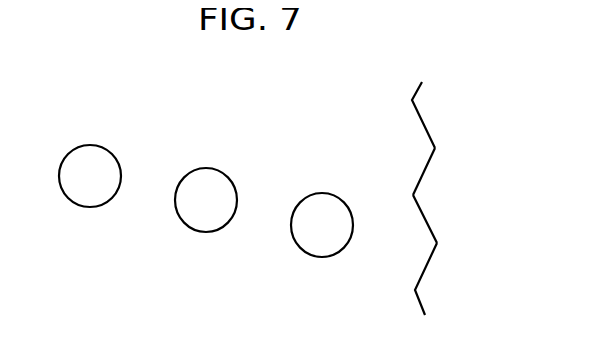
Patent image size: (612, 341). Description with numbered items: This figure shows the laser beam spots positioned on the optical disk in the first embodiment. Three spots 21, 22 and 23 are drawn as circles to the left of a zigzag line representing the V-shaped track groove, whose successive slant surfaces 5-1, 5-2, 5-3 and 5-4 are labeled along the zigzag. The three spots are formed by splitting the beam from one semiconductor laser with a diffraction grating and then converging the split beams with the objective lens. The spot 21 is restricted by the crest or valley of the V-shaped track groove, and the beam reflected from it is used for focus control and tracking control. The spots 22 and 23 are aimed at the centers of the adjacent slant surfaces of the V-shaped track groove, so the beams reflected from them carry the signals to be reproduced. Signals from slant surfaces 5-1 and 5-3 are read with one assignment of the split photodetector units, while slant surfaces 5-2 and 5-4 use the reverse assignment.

The laser beam spot 22 is at (78, 146).
The laser beam spot 21 is at (201, 170).
The laser beam spot 23 is at (308, 196).
The slant surface of V-shaped track groove 5-1 is at (408, 125).
The slant surface of V-shaped track groove 5-2 is at (413, 172).
The slant surface of V-shaped track groove 5-3 is at (410, 225).
The slant surface of V-shaped track groove 5-4 is at (407, 270).